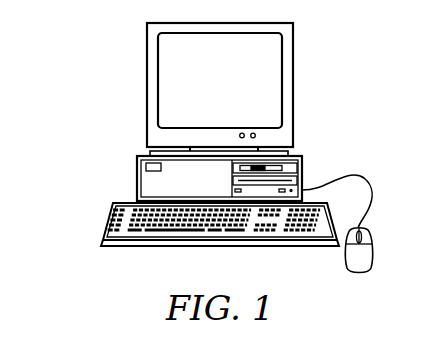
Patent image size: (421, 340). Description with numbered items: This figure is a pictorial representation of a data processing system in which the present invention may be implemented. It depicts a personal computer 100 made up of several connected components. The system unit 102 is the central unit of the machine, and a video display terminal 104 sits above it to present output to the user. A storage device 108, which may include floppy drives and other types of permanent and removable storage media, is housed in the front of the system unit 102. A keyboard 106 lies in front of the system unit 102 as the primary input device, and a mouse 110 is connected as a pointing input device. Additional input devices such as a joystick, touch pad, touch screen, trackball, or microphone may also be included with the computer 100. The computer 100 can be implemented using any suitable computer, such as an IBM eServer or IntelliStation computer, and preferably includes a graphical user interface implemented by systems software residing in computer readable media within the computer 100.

The computer 100 is at (80, 70).
The system unit 102 is at (137, 172).
The video display terminal 104 is at (295, 84).
The keyboard 106 is at (128, 247).
The storage device 108 is at (275, 170).
The mouse 110 is at (358, 274).